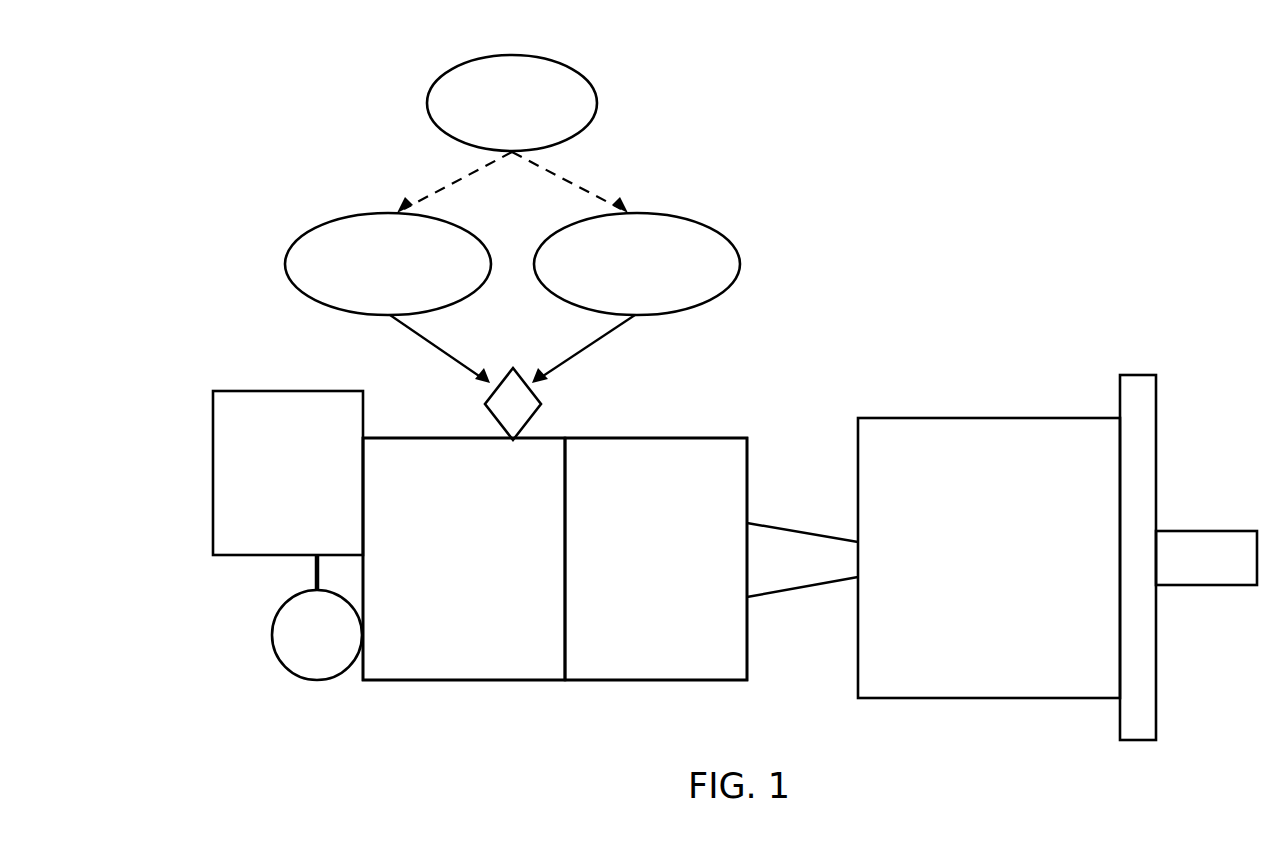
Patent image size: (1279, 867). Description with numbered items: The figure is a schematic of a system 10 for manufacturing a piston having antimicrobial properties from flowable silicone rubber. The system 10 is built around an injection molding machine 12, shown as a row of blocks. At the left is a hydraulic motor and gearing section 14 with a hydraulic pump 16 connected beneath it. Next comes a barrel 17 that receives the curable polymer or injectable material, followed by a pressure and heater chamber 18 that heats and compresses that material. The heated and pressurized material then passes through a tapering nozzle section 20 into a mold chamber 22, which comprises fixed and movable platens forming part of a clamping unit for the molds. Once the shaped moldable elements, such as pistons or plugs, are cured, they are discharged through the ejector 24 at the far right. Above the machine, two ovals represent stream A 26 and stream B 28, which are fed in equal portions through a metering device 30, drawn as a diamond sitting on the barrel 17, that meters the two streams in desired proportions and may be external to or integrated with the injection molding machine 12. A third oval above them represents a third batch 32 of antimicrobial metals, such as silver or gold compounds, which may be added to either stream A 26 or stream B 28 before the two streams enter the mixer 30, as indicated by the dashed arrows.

The system 10 is at (804, 342).
The injection molding machine 12 is at (670, 437).
The hydraulic motor and gearing section 14 is at (213, 475).
The hydraulic pump 16 is at (279, 665).
The barrel 17 is at (468, 682).
The pressure and heater chamber 18 is at (657, 682).
The nozzle section 20 is at (775, 525).
The mold chamber 22 is at (990, 418).
The ejector 24 is at (1207, 530).
The stream A 26 is at (315, 302).
The stream B 28 is at (718, 230).
The metering device 30 is at (522, 370).
The third batch 32 is at (580, 70).